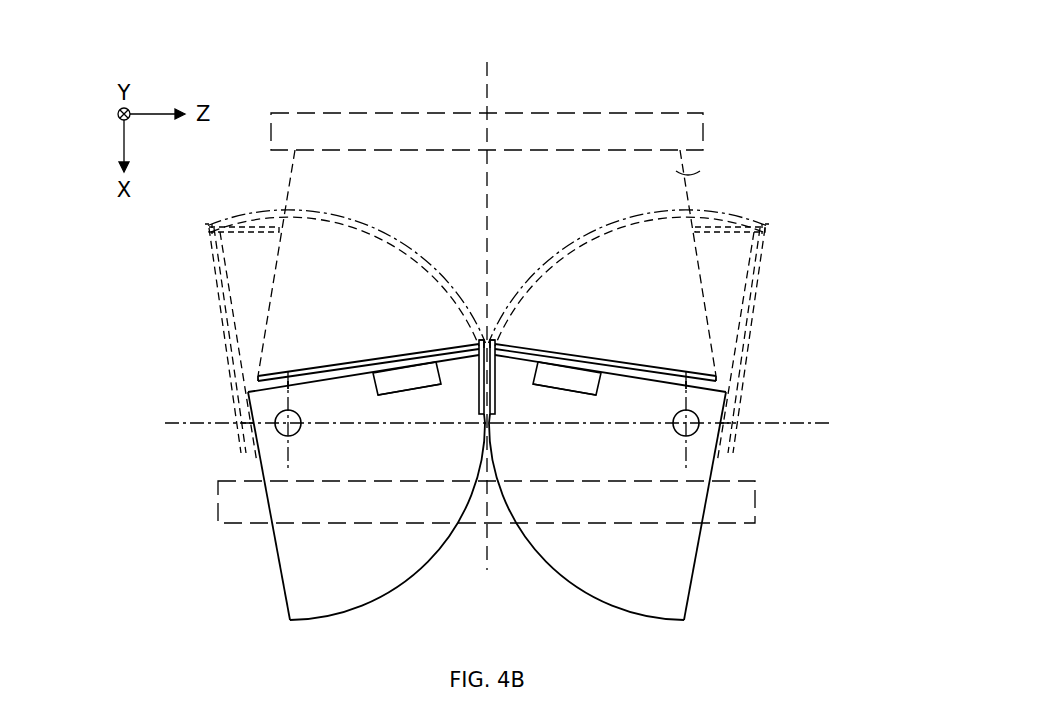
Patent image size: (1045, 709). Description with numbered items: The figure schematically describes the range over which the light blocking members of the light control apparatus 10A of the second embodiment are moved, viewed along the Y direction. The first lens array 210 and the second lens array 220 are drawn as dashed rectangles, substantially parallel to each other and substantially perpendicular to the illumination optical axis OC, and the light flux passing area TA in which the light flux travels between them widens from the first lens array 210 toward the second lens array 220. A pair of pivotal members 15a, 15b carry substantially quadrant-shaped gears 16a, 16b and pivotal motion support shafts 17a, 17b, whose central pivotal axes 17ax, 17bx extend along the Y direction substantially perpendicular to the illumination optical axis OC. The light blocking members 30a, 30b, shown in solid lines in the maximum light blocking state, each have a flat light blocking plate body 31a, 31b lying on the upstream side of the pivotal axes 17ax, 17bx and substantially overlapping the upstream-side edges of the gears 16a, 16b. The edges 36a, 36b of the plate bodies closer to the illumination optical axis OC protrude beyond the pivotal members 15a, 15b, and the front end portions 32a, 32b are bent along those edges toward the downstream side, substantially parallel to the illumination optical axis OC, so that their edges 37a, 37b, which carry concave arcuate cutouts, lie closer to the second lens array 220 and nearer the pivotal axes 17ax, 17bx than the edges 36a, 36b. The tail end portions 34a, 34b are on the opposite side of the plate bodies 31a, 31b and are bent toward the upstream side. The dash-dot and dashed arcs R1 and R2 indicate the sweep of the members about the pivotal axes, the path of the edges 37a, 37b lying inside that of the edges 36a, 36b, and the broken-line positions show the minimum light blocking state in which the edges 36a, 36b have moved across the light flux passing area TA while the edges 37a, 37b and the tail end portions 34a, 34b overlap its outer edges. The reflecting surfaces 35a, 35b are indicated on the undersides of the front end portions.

The light control apparatus 10A is at (752, 84).
The first lens array 210 is at (705, 128).
The second lens array 220 is at (758, 505).
The light flux passing area TA is at (704, 172).
The illumination optical axis OC is at (492, 92).
The outer rotation radius R1 is at (652, 214).
The inner rotation radius R2 is at (607, 232).
The light blocking member 30b is at (212, 388).
The light blocking member 30a is at (762, 388).
The light blocking plate body 31b is at (224, 336).
The light blocking plate body 31a is at (750, 336).
The front end portion 32b is at (217, 240).
The front end portion 32a is at (757, 240).
The tail end portion 34b is at (289, 378).
The tail end portion 34a is at (685, 378).
The left reflecting surface 35b is at (402, 396).
The right reflecting surface 35a is at (572, 396).
The edge of light blocking plate body 36b is at (203, 222).
The edge of light blocking plate body 36a is at (771, 222).
The edge of front end portion 37b is at (280, 235).
The edge of front end portion 37a is at (695, 235).
The pivotal motion support shaft 17b is at (301, 420).
The pivotal motion support shaft 17a is at (673, 420).
The pivotal axis 17bx is at (300, 430).
The pivotal axis 17ax is at (674, 430).
The pivotal member 15b is at (257, 576).
The pivotal member 15a is at (717, 576).
The gear 16b is at (407, 568).
The gear 16a is at (567, 568).